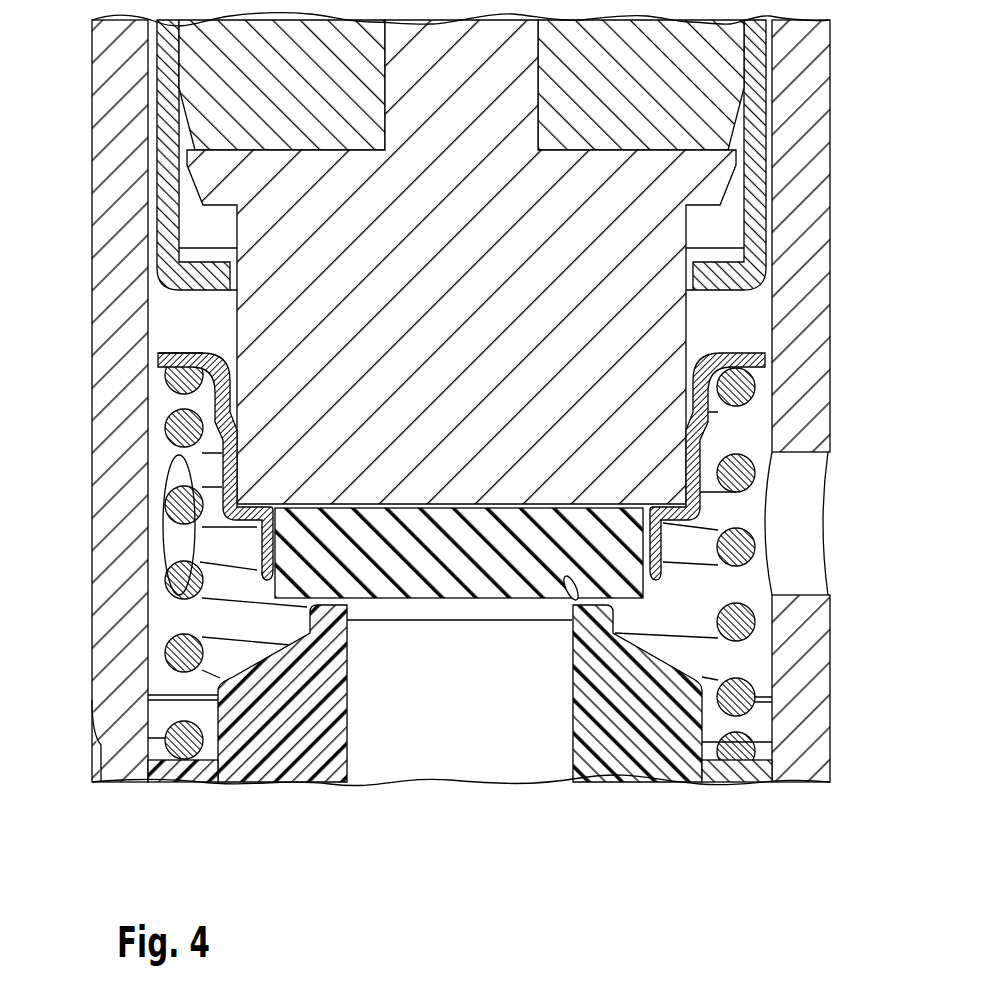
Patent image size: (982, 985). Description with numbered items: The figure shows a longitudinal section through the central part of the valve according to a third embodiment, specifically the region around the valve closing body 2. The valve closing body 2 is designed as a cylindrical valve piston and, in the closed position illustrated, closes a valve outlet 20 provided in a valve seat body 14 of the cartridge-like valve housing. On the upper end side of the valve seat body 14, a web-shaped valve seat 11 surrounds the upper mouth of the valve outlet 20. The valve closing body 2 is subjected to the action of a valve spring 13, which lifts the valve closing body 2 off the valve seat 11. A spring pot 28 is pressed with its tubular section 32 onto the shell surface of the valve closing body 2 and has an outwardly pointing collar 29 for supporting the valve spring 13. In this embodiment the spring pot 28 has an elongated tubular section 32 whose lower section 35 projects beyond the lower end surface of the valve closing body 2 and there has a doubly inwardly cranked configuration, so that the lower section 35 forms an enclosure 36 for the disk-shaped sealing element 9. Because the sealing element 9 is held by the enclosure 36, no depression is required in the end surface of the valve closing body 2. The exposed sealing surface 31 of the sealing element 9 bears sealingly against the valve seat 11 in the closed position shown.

The valve closing body 2 is at (587, 320).
The sealing element 9 is at (388, 567).
The valve seat 11 is at (567, 578).
The valve spring 13 is at (740, 548).
The valve seat body 14 is at (645, 742).
The valve outlet 20 is at (348, 712).
The spring pot 28 is at (707, 437).
The outwardly pointing collar 29 is at (168, 353).
The sealing surface 31 is at (488, 603).
The tubular section 32 is at (227, 475).
The lower section 35 is at (247, 533).
The enclosure 36 is at (273, 577).